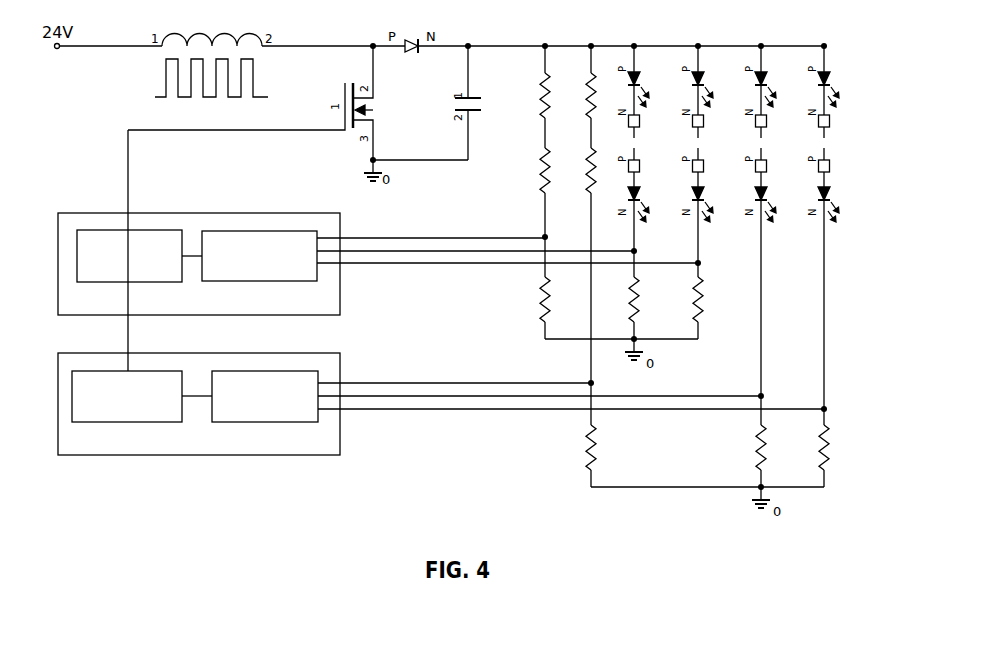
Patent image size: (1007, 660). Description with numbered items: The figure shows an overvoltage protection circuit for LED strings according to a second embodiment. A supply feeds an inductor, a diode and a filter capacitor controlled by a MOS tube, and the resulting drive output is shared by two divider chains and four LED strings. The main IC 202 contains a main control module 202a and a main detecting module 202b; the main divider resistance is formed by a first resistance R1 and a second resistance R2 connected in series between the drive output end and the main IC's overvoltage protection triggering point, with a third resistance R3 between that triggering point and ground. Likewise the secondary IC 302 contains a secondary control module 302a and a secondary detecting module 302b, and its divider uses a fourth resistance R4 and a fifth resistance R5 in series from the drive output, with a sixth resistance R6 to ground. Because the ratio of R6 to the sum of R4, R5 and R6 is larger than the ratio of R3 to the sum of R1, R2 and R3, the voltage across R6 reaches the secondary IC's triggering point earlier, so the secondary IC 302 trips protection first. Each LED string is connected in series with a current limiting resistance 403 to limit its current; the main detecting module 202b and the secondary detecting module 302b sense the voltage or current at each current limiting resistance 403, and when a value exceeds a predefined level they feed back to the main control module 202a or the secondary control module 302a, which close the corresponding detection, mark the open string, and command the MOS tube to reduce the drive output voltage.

The main IC 202 is at (378, 264).
The main control module 202a is at (129, 256).
The main detecting module 202b is at (440, 256).
The secondary IC 302 is at (441, 404).
The secondary control module 302a is at (127, 396).
The secondary detecting module 302b is at (503, 396).
The current limiting resistance 403 is at (700, 290).
The first resistance R1 is at (533, 84).
The second resistance R2 is at (533, 177).
The third resistance R3 is at (533, 288).
The fourth resistance R4 is at (579, 84).
The fifth resistance R5 is at (579, 250).
The sixth resistance R6 is at (579, 435).